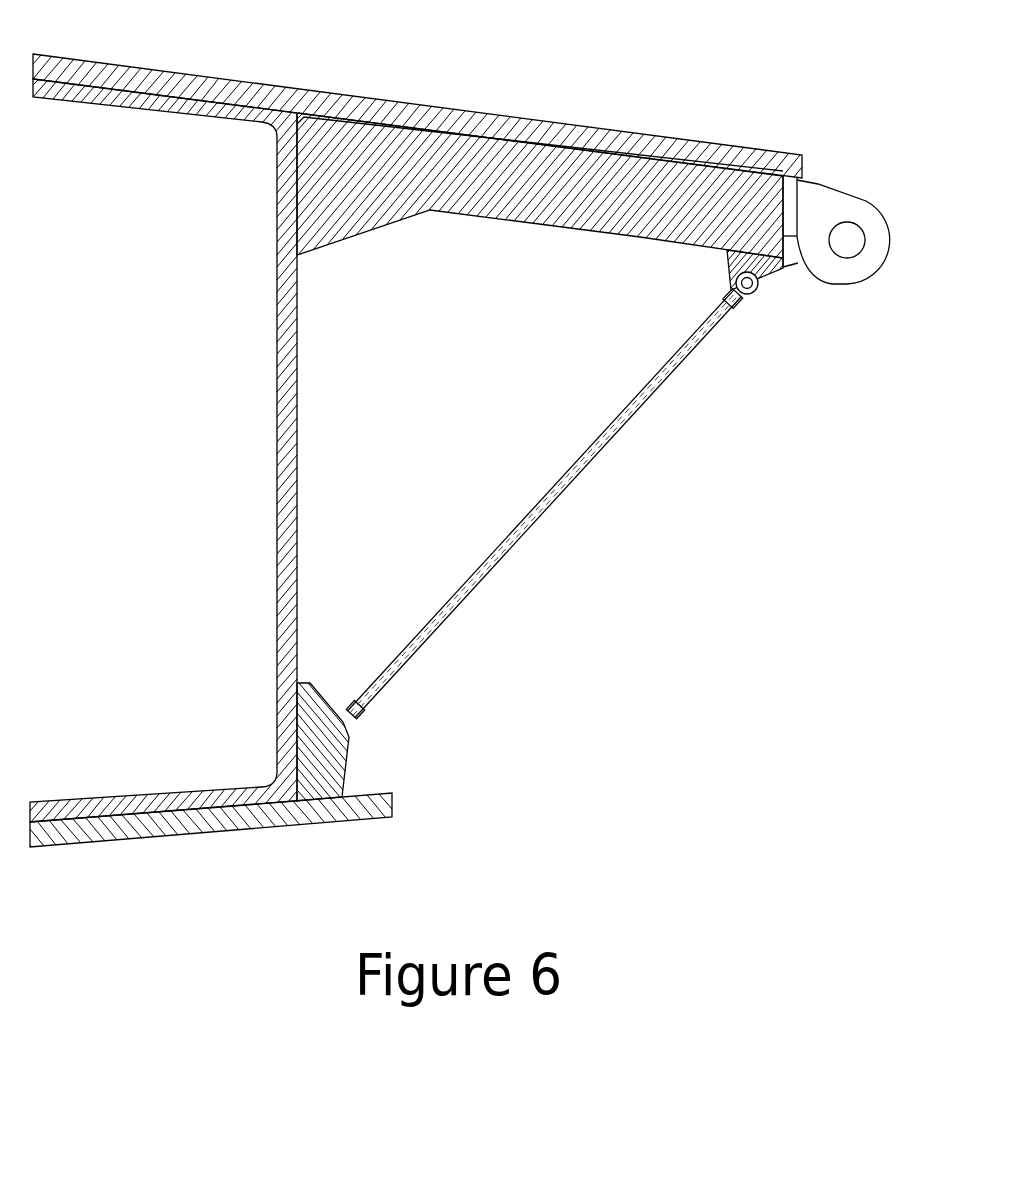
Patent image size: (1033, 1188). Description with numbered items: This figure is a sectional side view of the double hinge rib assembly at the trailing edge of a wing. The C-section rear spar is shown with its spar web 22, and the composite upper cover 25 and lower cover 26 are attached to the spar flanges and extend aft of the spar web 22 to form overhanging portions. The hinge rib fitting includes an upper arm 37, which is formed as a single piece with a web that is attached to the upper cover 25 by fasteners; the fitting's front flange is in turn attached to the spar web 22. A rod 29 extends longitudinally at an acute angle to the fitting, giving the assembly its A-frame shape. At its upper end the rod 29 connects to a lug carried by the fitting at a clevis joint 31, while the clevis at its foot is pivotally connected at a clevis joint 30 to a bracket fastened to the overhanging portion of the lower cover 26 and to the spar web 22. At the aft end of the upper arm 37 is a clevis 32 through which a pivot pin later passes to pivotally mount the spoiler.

The upper cover 25 is at (368, 103).
The upper arm 37 is at (540, 197).
The spar web 22 is at (292, 444).
The rod 29 is at (628, 412).
The clevis joint 30 is at (350, 722).
The clevis joint 31 is at (750, 287).
The clevis 32 is at (846, 250).
The lower cover 26 is at (370, 806).